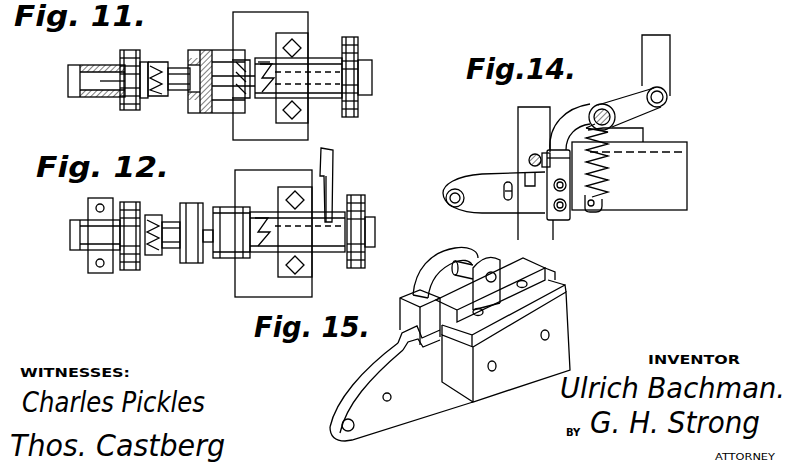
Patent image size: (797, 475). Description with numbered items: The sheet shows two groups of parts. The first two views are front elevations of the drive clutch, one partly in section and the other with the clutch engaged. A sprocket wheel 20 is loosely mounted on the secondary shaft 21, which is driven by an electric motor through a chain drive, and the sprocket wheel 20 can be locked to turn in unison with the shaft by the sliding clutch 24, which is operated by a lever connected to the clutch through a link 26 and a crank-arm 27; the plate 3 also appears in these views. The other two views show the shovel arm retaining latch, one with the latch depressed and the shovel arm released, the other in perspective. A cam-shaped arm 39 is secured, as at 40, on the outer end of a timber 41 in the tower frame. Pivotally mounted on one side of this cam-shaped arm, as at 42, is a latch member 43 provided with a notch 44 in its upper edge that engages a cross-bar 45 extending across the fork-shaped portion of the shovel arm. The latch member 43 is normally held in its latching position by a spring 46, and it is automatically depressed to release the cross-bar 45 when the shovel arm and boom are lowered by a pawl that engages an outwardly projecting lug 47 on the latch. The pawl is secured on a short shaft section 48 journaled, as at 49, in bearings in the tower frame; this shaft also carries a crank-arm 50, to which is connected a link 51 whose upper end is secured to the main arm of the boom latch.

In FIG. 11, the frame plate 3 is at (270, 76).
In FIG. 12, the frame plate 3 is at (273, 233).
In FIG. 11, the sprocket wheel 20 is at (130, 52).
In FIG. 12, the sprocket wheel 20 is at (137, 198).
In FIG. 11, the secondary shaft 21 is at (116, 88).
In FIG. 11, the sliding clutch 24 is at (160, 66).
In FIG. 12, the sliding clutch 24 is at (158, 252).
In FIG. 12, the link 26 is at (333, 166).
In FIG. 12, the crank-arm 27 is at (332, 214).
In FIG. 14, the cam-shaped arm 39 is at (493, 206).
In FIG. 15, the cam-shaped arm 39 is at (401, 392).
In FIG. 15, the securing point 40 is at (506, 347).
In FIG. 14, the timber 41 is at (629, 176).
In FIG. 15, the timber 41 is at (552, 268).
In FIG. 14, the pivot 42 is at (446, 199).
In FIG. 15, the pivot 42 is at (352, 431).
In FIG. 14, the latch member 43 is at (490, 173).
In FIG. 15, the latch member 43 is at (350, 388).
In FIG. 14, the notch 44 is at (543, 185).
In FIG. 15, the notch 44 is at (409, 333).
In FIG. 14, the cross-bar 45 is at (531, 155).
In FIG. 14, the spring 46 is at (572, 110).
In FIG. 15, the spring 46 is at (430, 270).
In FIG. 14, the lug 47 is at (542, 173).
In FIG. 15, the lug 47 is at (403, 296).
In FIG. 14, the short shaft section 48 is at (590, 100).
In FIG. 15, the short shaft section 48 is at (447, 252).
In FIG. 14, the bearings 49 is at (636, 130).
In FIG. 15, the bearings 49 is at (496, 270).
In FIG. 14, the crank-arm 50 is at (668, 95).
In FIG. 14, the link 51 is at (656, 40).